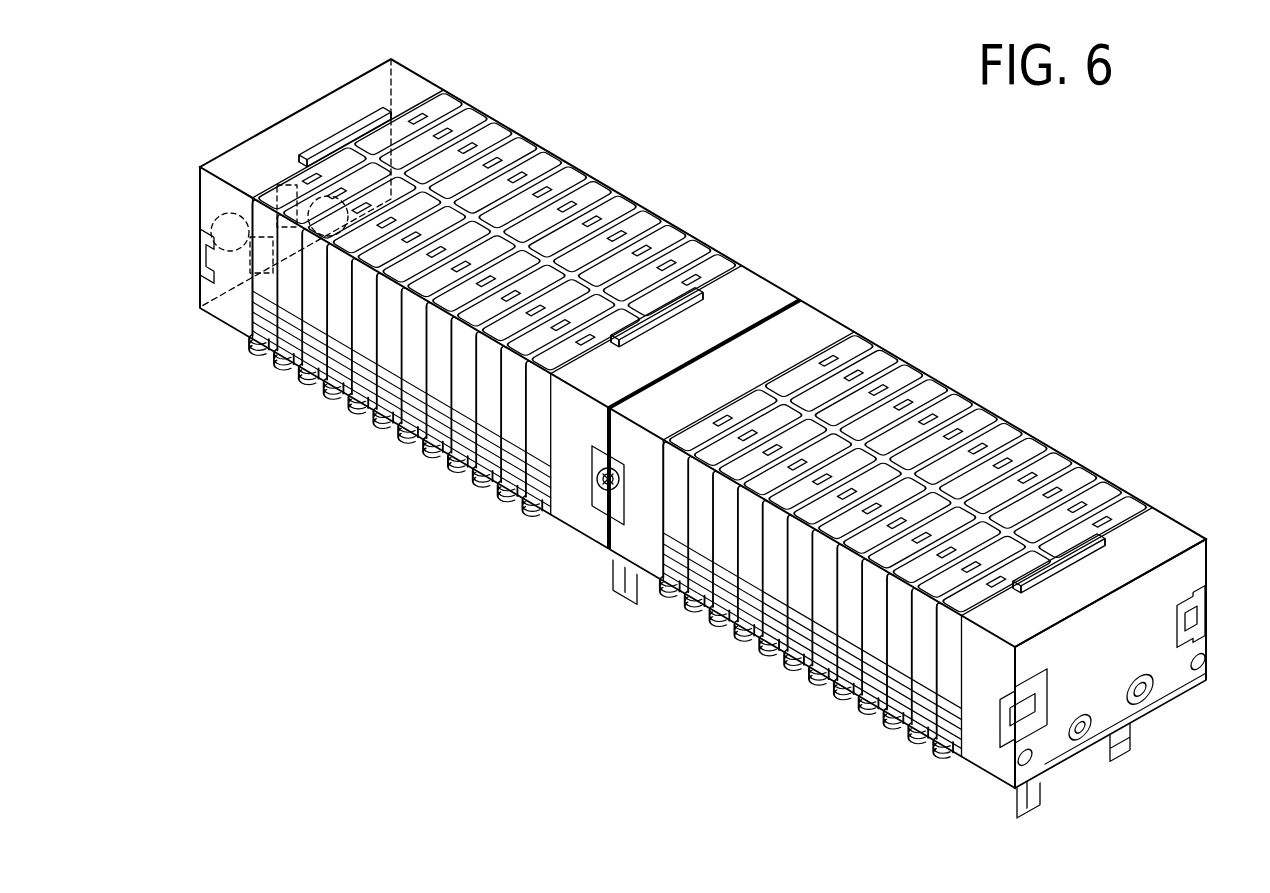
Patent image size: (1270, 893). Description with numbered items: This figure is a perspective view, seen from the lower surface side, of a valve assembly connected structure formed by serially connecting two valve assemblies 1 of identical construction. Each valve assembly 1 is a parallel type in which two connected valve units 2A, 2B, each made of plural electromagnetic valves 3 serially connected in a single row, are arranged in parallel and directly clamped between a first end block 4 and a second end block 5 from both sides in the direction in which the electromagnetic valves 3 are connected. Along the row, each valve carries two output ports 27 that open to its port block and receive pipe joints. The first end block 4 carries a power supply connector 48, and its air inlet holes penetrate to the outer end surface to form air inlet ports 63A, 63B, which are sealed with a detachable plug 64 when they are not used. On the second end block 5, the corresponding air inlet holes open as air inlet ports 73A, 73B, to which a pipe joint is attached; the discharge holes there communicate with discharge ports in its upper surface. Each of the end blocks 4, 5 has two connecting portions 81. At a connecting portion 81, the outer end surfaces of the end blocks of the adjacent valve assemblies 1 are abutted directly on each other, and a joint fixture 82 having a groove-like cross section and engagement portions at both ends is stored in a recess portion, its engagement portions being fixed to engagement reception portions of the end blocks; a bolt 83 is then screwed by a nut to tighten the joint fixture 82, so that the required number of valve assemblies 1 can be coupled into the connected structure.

The valve assembly 1 is at (734, 137).
The connected valve unit 2A is at (636, 165).
The connected valve unit 2B is at (312, 423).
The electromagnetic valve 3 is at (695, 243).
The first end block 4 is at (762, 268).
The second end block 5 is at (413, 74).
The output port 27 is at (433, 455).
The power supply connector 48 is at (620, 588).
The air inlet port 63A is at (1160, 695).
The air inlet port 63B is at (1125, 768).
The plug 64 is at (1083, 744).
The air inlet port 73A is at (290, 185).
The air inlet port 73B is at (205, 212).
The connecting portion 81 is at (183, 231).
The joint fixture 82 is at (603, 490).
The bolt 83 is at (600, 487).